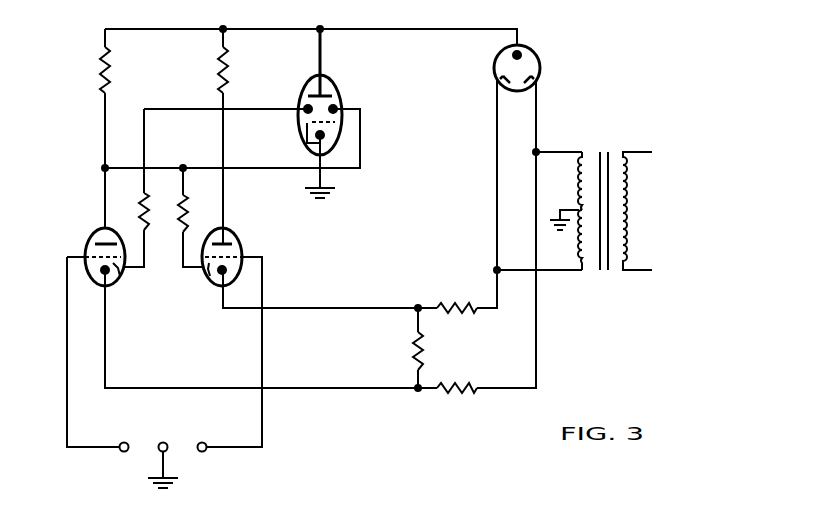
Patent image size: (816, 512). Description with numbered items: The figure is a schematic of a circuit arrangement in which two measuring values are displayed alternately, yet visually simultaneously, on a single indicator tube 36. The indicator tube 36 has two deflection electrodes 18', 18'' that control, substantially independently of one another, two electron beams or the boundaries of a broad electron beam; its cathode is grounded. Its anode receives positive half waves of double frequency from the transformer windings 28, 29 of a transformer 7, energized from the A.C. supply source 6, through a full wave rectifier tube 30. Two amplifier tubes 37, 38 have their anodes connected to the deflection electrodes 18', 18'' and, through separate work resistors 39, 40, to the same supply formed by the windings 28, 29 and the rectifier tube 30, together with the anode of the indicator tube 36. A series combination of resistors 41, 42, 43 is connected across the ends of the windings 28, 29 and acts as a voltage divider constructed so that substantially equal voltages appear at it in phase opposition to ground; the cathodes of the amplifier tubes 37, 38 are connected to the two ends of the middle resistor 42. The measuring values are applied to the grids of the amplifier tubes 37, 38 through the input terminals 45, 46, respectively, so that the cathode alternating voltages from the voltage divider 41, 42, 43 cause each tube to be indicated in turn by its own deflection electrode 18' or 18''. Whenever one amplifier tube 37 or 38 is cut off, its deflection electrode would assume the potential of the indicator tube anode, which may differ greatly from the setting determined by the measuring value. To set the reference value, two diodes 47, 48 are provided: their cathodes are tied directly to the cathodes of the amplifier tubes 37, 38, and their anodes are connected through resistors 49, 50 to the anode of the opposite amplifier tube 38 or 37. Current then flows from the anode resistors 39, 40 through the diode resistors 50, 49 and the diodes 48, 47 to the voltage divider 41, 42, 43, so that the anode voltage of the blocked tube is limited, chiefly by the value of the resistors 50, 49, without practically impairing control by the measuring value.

The work resistor 39 is at (116, 70).
The work resistor 40 is at (234, 70).
The indicator tube 36 is at (332, 113).
The deflection electrode 18' is at (296, 102).
The deflection electrode 18'' is at (353, 102).
The full wave rectifier tube 30 is at (528, 67).
The transformer 7 is at (605, 200).
The transformer winding 28 is at (566, 191).
The transformer winding 29 is at (569, 240).
The A.C. supply source 6 is at (637, 211).
The resistor 41 is at (457, 300).
The resistor 42 is at (431, 351).
The resistor 43 is at (457, 401).
The diode resistor 49 is at (132, 211).
The diode resistor 50 is at (195, 213).
The amplifier tube 37 is at (95, 253).
The amplifier tube 38 is at (226, 255).
The diode 47 is at (121, 282).
The diode 48 is at (204, 282).
The input terminal 45 is at (126, 460).
The input terminal 46 is at (204, 460).